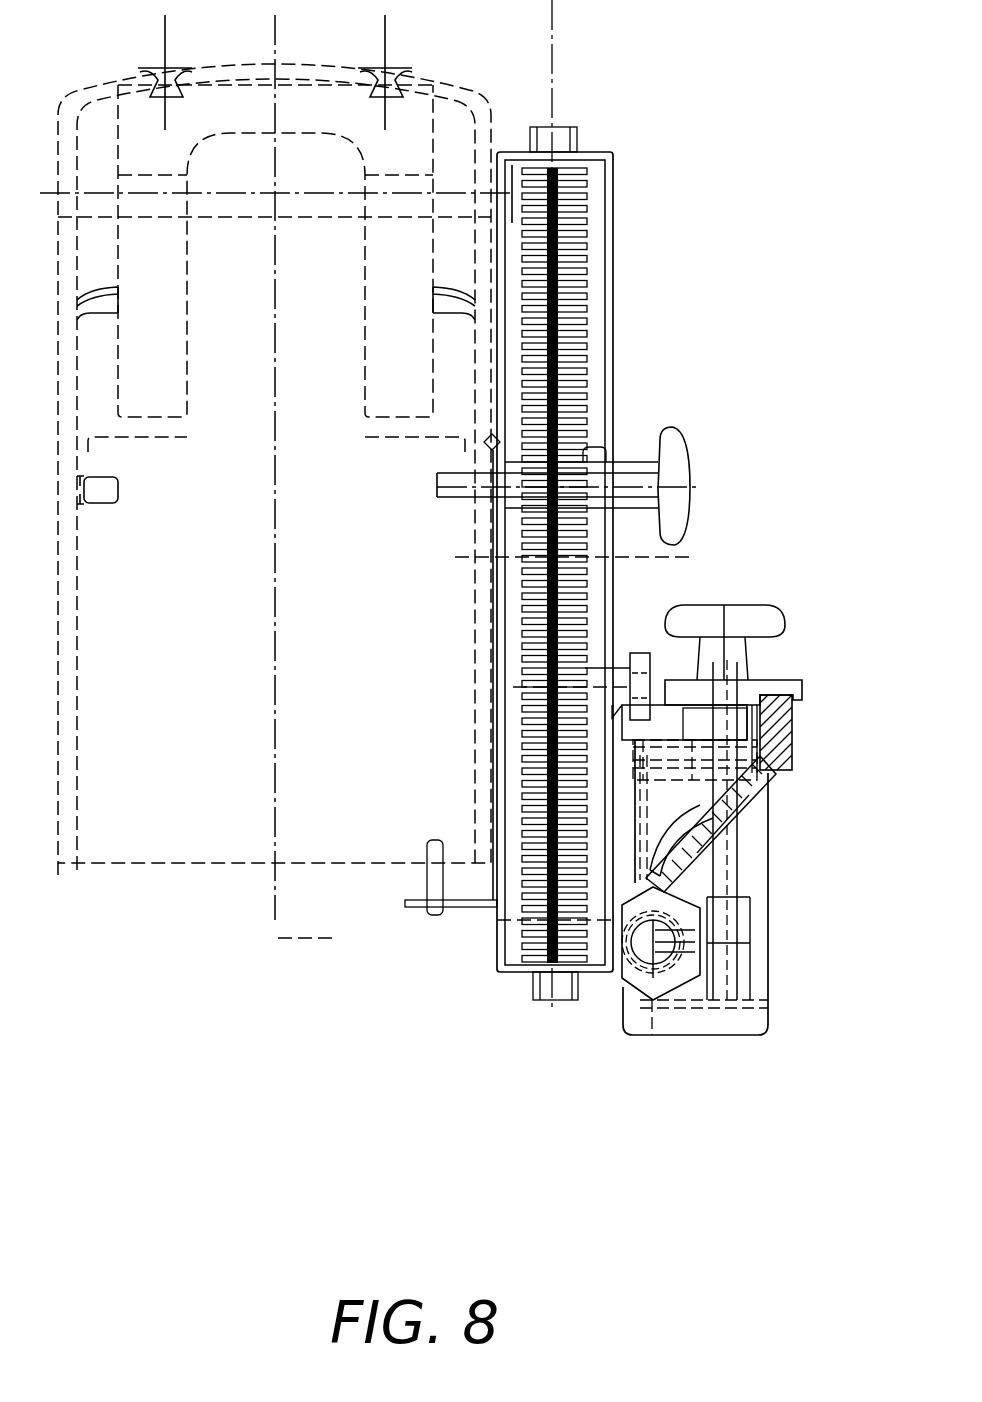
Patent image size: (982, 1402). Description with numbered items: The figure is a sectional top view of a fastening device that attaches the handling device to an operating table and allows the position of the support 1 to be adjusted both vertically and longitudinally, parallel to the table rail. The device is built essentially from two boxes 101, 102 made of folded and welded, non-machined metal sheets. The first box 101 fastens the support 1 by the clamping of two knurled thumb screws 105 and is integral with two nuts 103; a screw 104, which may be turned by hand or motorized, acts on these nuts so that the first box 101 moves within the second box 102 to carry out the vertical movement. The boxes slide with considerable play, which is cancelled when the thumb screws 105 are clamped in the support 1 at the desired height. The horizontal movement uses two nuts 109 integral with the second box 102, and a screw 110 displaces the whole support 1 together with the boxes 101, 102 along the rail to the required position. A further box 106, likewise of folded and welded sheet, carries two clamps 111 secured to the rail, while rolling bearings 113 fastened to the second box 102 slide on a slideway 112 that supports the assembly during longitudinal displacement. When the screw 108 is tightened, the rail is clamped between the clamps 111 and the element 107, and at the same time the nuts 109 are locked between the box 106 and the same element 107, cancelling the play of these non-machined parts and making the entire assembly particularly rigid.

The support 1 is at (342, 832).
The first box 101 is at (500, 438).
The second box 102 is at (510, 972).
The nuts 103 is at (607, 425).
The screw 104 is at (585, 313).
The knurled thumb screws 105 is at (677, 467).
The box 106 is at (745, 793).
The element 107 is at (668, 993).
The screw 108 is at (733, 613).
The nuts 109 is at (677, 908).
The screw 110 is at (614, 972).
The clamps 111 is at (777, 687).
The slideway 112 is at (627, 732).
The rolling bearings 113 is at (640, 660).